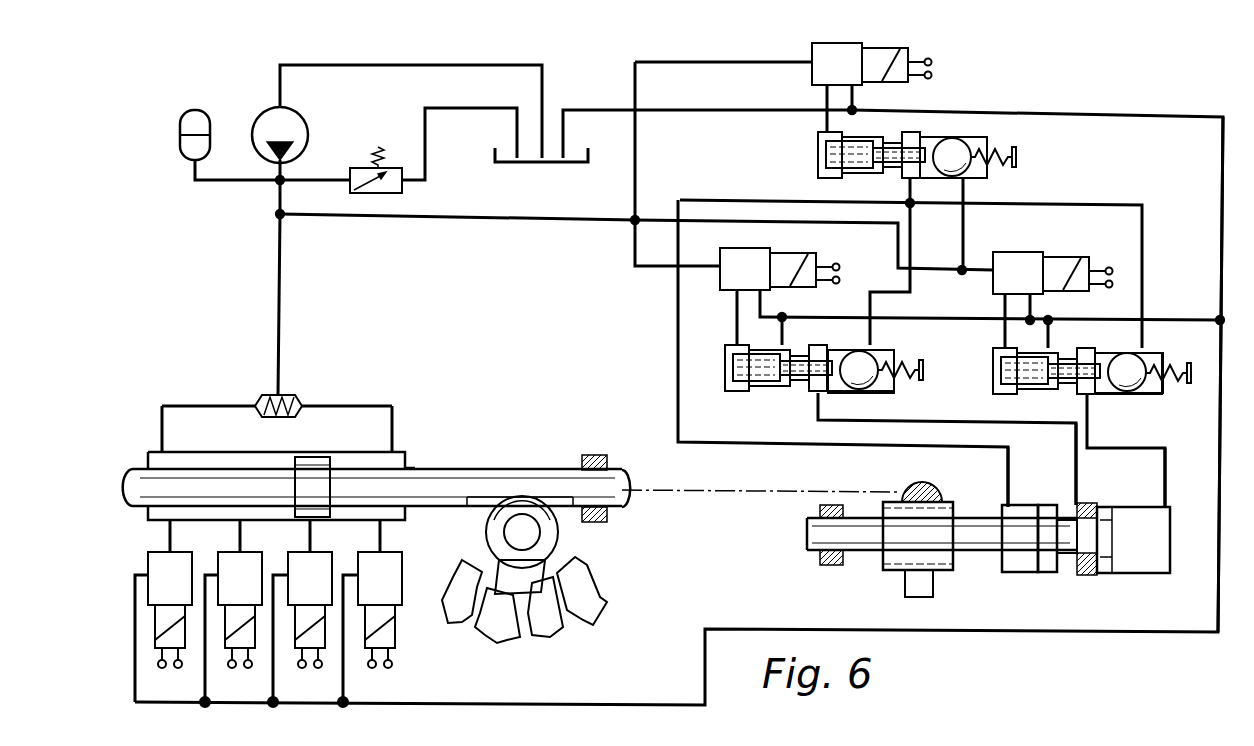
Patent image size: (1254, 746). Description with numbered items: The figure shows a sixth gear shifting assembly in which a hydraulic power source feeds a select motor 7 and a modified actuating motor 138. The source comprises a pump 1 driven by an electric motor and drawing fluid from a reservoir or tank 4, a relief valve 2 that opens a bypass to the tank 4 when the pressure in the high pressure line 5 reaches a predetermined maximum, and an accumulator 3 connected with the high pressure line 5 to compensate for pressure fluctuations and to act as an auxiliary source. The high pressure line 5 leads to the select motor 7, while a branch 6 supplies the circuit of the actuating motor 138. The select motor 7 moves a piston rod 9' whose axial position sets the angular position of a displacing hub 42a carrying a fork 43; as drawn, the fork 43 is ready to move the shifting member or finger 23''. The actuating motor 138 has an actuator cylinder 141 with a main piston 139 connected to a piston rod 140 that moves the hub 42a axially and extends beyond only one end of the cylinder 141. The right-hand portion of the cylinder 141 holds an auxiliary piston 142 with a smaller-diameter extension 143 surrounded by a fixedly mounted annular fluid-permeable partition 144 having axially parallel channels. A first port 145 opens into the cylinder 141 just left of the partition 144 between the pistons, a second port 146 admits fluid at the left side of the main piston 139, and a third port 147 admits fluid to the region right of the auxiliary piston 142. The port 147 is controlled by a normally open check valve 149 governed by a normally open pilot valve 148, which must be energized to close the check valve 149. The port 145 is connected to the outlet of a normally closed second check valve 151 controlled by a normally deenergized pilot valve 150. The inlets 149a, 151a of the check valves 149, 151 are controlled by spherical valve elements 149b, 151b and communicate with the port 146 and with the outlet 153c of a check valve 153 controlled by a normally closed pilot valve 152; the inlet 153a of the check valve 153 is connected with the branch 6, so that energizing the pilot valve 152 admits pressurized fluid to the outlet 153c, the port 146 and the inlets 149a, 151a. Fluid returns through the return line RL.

The pump 1 is at (298, 117).
The relief valve 2 is at (350, 194).
The accumulator 3 is at (176, 118).
The reservoir or tank 4 is at (492, 160).
The high pressure line 5 is at (281, 290).
The branch of the high pressure line 6 is at (412, 222).
The speed selecting motor 7 is at (431, 436).
The piston rod 9' is at (511, 482).
The shifting member or finger 23'' is at (524, 616).
The displacing hub or sleeve 42a is at (896, 563).
The fork 43 is at (498, 570).
The actuating motor 138 is at (812, 578).
The main piston 139 is at (1046, 573).
The piston rod 140 is at (978, 542).
The actuator cylinder 141 is at (1012, 574).
The auxiliary piston 142 is at (1110, 556).
The smaller-diameter extension 143 is at (1068, 574).
The annular fluid-permeable partition 144 is at (1092, 576).
The first fluid-admitting port 145 is at (1078, 477).
The second port 146 is at (1011, 472).
The third port 147 is at (1167, 477).
The electromagnetic pilot valve 148 is at (1010, 261).
The check valve 149 is at (1147, 395).
The inlet of check valve 149 149a is at (1144, 351).
The spherical valve element 149b is at (1122, 355).
The electromagnetic pilot valve 150 is at (762, 258).
The second check valve 151 is at (742, 394).
The inlet of check valve 151 151a is at (867, 349).
The spherical valve element 151b is at (857, 390).
The electromagnetic pilot valve 152 is at (836, 52).
The check valve 153 is at (992, 179).
The inlet of check valve 153 153a is at (965, 185).
The outlet of check valve 153 153c is at (904, 180).
The return line RL is at (1142, 116).